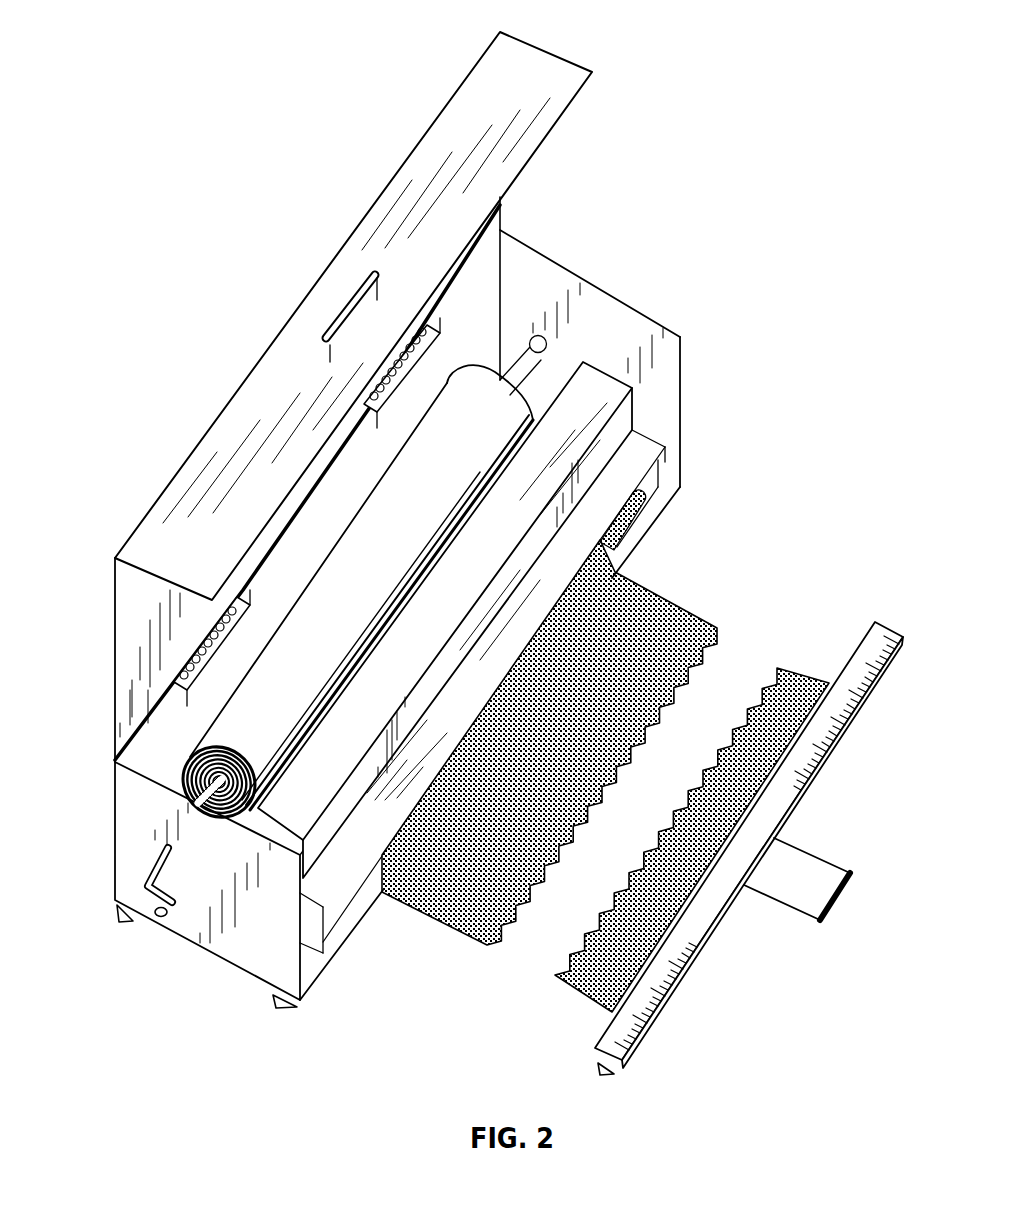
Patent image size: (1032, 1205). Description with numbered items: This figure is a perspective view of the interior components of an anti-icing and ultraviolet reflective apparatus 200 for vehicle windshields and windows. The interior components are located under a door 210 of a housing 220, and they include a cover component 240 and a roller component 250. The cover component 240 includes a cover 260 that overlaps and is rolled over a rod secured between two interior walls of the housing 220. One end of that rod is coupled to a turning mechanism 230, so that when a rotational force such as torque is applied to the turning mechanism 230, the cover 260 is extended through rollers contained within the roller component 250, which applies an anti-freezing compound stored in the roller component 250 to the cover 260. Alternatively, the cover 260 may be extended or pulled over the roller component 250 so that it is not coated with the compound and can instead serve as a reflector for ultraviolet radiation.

The anti-icing and ultraviolet reflective apparatus 200 is at (156, 94).
The door 210 is at (459, 100).
The housing 220 is at (122, 806).
The turning mechanism 230 is at (137, 888).
The cover component 240 is at (213, 706).
The roller component 250 is at (625, 437).
The cover 260 is at (672, 612).